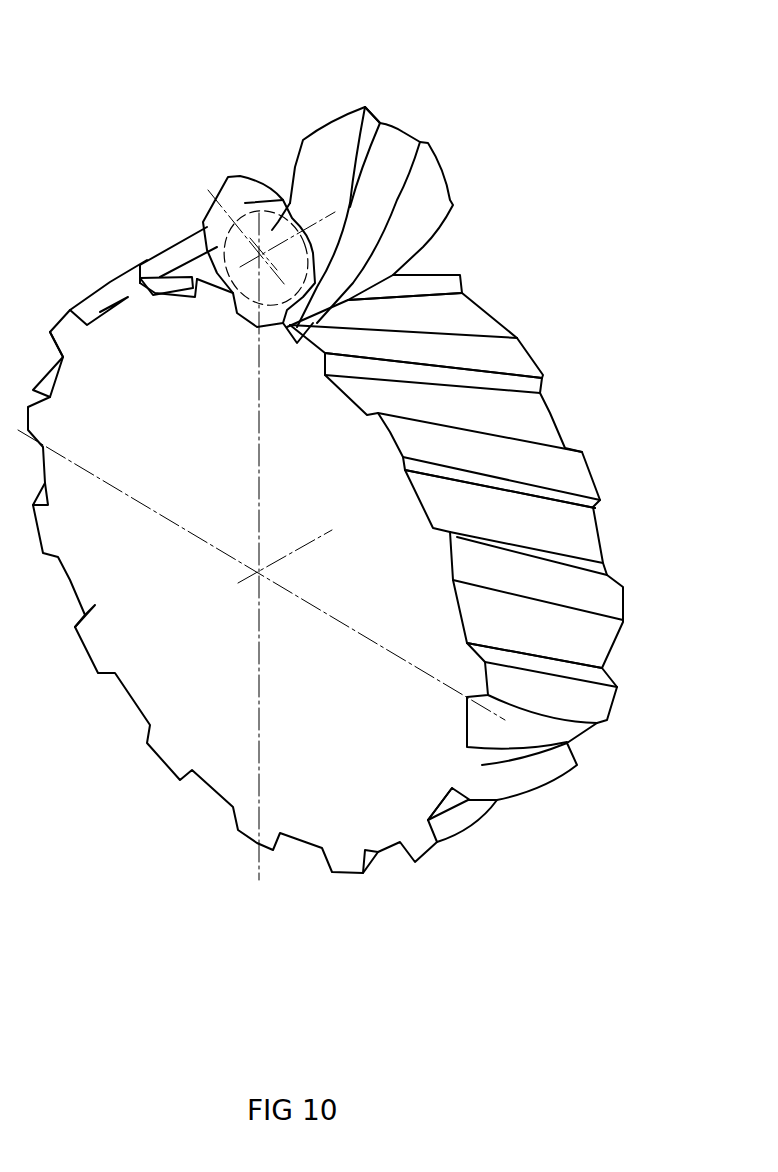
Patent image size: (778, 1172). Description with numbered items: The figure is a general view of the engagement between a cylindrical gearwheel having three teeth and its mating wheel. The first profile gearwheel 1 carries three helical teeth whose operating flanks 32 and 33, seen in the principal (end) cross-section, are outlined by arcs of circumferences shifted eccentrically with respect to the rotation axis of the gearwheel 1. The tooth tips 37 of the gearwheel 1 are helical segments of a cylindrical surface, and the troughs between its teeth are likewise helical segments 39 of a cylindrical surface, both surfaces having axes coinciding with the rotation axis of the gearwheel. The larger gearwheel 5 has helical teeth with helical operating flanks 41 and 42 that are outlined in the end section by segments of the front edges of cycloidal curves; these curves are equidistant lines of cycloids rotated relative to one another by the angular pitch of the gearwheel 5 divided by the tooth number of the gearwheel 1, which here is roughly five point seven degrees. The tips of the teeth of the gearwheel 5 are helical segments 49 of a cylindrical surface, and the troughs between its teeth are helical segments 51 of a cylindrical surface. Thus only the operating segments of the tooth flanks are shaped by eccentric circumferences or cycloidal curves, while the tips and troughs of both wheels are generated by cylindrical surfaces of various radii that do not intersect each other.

The first profile gearwheel 1 is at (472, 130).
The gearwheel 5 is at (575, 413).
The operating flank 32 is at (288, 210).
The operating flank 33 is at (368, 130).
The tooth tip 37 is at (335, 142).
The helical segment of trough 39 is at (272, 195).
The helical operating flank 41 is at (572, 670).
The helical operating flank 42 is at (468, 377).
The helical segment of tooth tip 49 is at (538, 470).
The helical segment of trough 51 is at (438, 315).